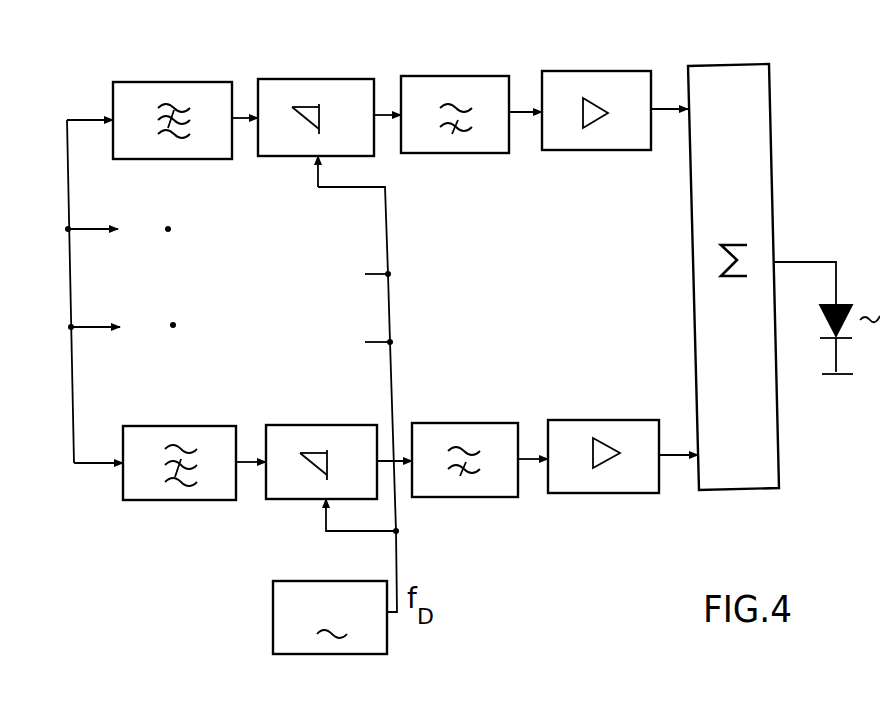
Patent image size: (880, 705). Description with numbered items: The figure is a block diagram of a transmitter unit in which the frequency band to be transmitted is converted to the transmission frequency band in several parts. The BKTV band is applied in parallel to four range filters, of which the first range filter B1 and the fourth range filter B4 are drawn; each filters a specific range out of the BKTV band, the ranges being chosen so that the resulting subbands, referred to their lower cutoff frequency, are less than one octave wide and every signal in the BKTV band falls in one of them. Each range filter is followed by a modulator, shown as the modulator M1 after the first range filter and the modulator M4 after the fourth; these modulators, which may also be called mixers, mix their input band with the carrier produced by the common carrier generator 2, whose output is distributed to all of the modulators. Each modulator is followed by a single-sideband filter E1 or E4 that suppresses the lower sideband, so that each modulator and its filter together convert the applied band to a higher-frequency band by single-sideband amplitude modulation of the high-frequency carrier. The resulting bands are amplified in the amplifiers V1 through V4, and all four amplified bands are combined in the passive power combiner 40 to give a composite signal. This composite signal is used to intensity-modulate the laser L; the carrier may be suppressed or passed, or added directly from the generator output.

The range filter B1 is at (177, 82).
The modulator M1 is at (320, 79).
The single-sideband filter E1 is at (455, 76).
The amplifier V1 is at (598, 71).
The passive power combiner 40 is at (727, 65).
The range filter B4 is at (190, 426).
The modulator M4 is at (321, 425).
The single-sideband filter E4 is at (466, 423).
The amplifier V4 is at (600, 420).
The carrier generator 2 is at (297, 580).
The laser L is at (824, 305).